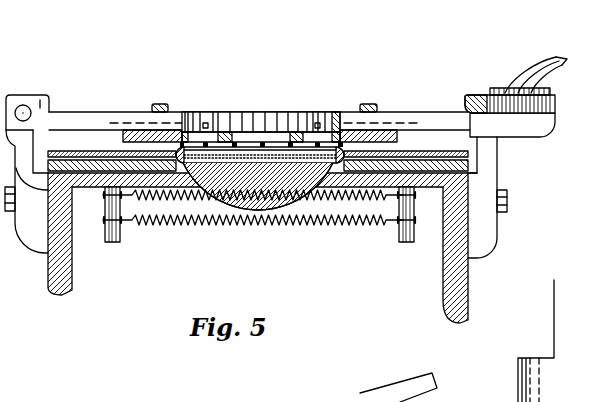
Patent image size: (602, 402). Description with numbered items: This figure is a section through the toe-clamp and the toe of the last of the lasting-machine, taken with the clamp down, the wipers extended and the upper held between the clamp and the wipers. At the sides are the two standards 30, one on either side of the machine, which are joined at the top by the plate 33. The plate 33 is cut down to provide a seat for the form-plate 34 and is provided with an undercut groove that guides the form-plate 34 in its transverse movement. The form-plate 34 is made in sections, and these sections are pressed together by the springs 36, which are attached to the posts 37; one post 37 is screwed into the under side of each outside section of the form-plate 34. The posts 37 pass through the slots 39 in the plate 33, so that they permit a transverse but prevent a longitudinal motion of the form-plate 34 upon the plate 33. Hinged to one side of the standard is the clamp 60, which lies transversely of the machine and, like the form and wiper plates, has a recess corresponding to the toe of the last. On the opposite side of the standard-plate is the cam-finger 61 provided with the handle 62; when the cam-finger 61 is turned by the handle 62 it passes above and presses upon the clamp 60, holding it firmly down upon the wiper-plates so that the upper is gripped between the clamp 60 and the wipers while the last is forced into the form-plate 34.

The standard 30 is at (47, 285).
The plate 33 is at (472, 182).
The form-plate 34 is at (470, 166).
The spring 36 is at (344, 226).
The post 37 is at (118, 243).
The slot 39 is at (103, 187).
The clamp 60 is at (125, 112).
The cam-finger 61 is at (482, 93).
The handle 62 is at (560, 62).